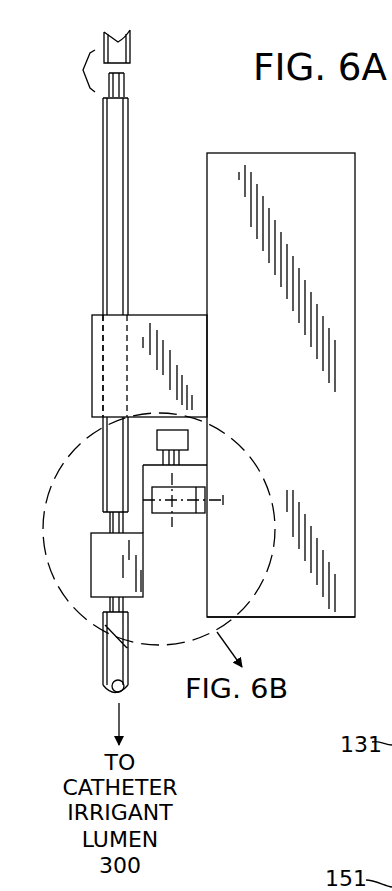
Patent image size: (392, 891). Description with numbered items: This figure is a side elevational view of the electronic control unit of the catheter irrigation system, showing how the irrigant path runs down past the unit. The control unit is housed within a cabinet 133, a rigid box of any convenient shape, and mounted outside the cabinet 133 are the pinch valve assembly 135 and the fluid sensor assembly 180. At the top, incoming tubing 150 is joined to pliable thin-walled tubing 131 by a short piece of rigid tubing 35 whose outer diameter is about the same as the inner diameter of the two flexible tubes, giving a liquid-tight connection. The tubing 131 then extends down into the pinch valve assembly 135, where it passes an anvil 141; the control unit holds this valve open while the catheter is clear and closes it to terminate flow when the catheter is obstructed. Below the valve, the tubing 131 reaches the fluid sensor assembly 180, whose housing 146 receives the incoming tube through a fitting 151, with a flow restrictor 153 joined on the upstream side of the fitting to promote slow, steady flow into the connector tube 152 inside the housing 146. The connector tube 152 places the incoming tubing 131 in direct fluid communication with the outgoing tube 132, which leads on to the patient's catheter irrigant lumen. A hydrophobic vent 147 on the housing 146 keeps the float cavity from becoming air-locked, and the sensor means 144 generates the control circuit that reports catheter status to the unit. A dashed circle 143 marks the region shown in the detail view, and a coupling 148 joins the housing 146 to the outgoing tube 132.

The tubing 150 is at (120, 52).
The rigid tubing 35 is at (118, 83).
The pliable thin-walled tubing 131 is at (122, 133).
The cabinet 133 is at (298, 165).
The pinch valve assembly 135 is at (85, 352).
The anvil 141 is at (140, 367).
The hydrophobic vent 147 is at (188, 440).
The means for generating a control circuit 144 is at (186, 513).
The detail region 143 is at (253, 460).
The fitting 151 is at (110, 525).
The housing 146 is at (150, 588).
The coupling 148 is at (105, 607).
The outgoing tube 132 is at (107, 660).
The fluid sensor assembly 180 is at (295, 622).
The flow restrictor 153 is at (391, 795).
The connector tube 152 is at (391, 835).